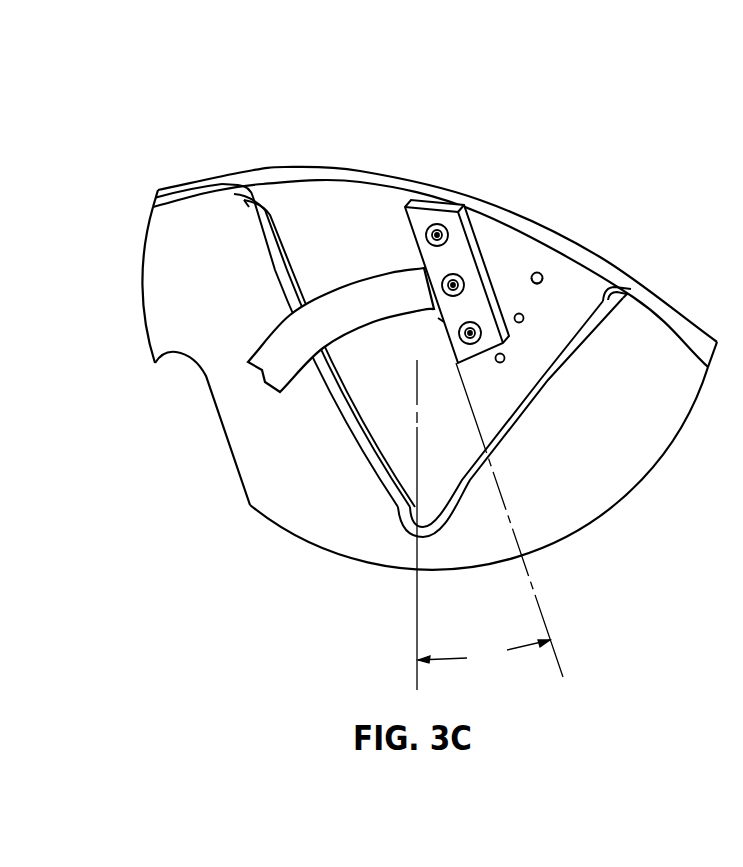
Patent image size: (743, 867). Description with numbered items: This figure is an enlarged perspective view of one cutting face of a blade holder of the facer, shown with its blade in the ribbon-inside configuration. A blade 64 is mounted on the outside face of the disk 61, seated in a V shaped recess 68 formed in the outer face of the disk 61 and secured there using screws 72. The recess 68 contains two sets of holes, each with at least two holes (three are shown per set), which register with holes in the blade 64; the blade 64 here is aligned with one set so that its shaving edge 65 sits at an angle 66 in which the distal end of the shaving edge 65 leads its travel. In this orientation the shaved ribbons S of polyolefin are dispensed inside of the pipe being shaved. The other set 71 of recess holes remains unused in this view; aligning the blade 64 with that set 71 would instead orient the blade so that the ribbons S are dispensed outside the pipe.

The disk 61 is at (200, 180).
The shaved ribbons S is at (340, 288).
The screws 72 is at (423, 205).
The blade 64 is at (447, 215).
The other set of recess holes 71 is at (541, 273).
The shaving edge 65 is at (441, 321).
The V shaped recess 68 is at (533, 407).
The angle 66 is at (484, 655).